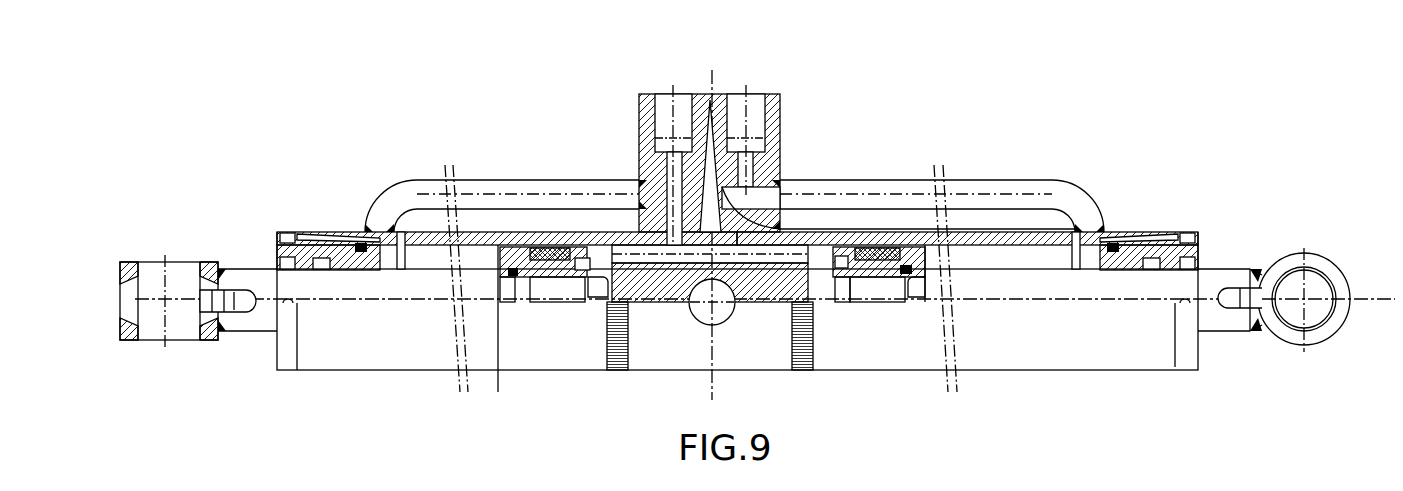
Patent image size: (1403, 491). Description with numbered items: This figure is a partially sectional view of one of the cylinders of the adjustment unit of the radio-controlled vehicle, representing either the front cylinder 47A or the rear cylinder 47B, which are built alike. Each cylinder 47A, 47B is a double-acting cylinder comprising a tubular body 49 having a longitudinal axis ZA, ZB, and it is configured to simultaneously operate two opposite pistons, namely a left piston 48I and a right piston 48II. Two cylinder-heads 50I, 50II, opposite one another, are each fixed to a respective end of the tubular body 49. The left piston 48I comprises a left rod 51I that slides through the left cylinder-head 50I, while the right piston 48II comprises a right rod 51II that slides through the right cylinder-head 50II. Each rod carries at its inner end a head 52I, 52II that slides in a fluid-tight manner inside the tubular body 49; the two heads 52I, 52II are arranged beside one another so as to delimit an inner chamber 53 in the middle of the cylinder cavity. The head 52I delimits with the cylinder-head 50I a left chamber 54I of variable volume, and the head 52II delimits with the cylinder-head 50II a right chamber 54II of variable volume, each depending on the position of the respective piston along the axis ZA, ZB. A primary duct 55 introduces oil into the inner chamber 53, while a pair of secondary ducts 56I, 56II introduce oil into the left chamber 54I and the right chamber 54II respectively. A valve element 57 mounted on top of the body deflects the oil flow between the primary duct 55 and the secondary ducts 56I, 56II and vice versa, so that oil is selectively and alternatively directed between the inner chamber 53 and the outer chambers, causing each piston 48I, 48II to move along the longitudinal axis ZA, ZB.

The front cylinder 47A is at (914, 95).
The rear cylinder 47B is at (990, 72).
The left piston 48I is at (1200, 278).
The right piston 48II is at (240, 269).
The tubular body 49 is at (868, 348).
The left cylinder-head 50I is at (1153, 245).
The right cylinder-head 50II is at (327, 246).
The left rod 51I is at (992, 288).
The right rod 51II is at (372, 290).
The head of the left piston 52I is at (878, 245).
The head of the right piston 52II is at (547, 243).
The inner chamber 53 is at (647, 259).
The left chamber 54I is at (1038, 262).
The right chamber 54II is at (426, 259).
The primary duct 55 is at (663, 114).
The secondary duct 56I is at (1077, 194).
The secondary duct 56II is at (403, 192).
The valve element 57 is at (785, 117).
The longitudinal axis ZA is at (1378, 302).
The longitudinal axis ZB is at (765, 347).